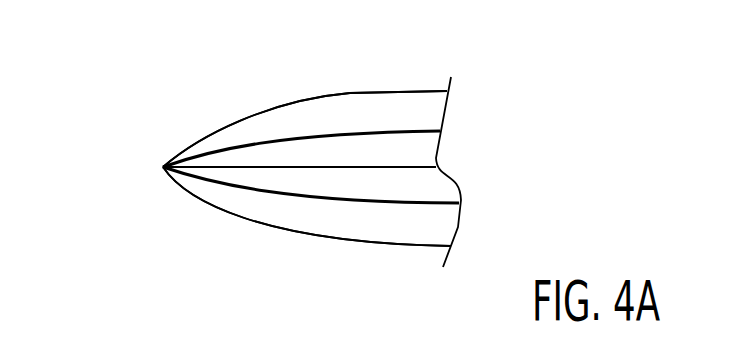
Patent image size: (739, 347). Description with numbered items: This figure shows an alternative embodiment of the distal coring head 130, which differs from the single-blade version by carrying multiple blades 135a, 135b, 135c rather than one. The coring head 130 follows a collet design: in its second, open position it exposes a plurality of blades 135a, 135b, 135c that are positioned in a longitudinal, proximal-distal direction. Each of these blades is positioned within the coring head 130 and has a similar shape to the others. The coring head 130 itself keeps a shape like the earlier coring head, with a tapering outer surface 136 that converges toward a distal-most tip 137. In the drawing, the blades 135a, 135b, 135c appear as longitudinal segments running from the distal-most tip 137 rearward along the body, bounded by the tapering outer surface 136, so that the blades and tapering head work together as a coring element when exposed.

The coring head 130 is at (210, 100).
The tapering outer surface 136 is at (300, 98).
The blade 135a is at (402, 131).
The blade 135b is at (395, 167).
The blade 135c is at (300, 200).
The distal-most tip 137 is at (163, 167).